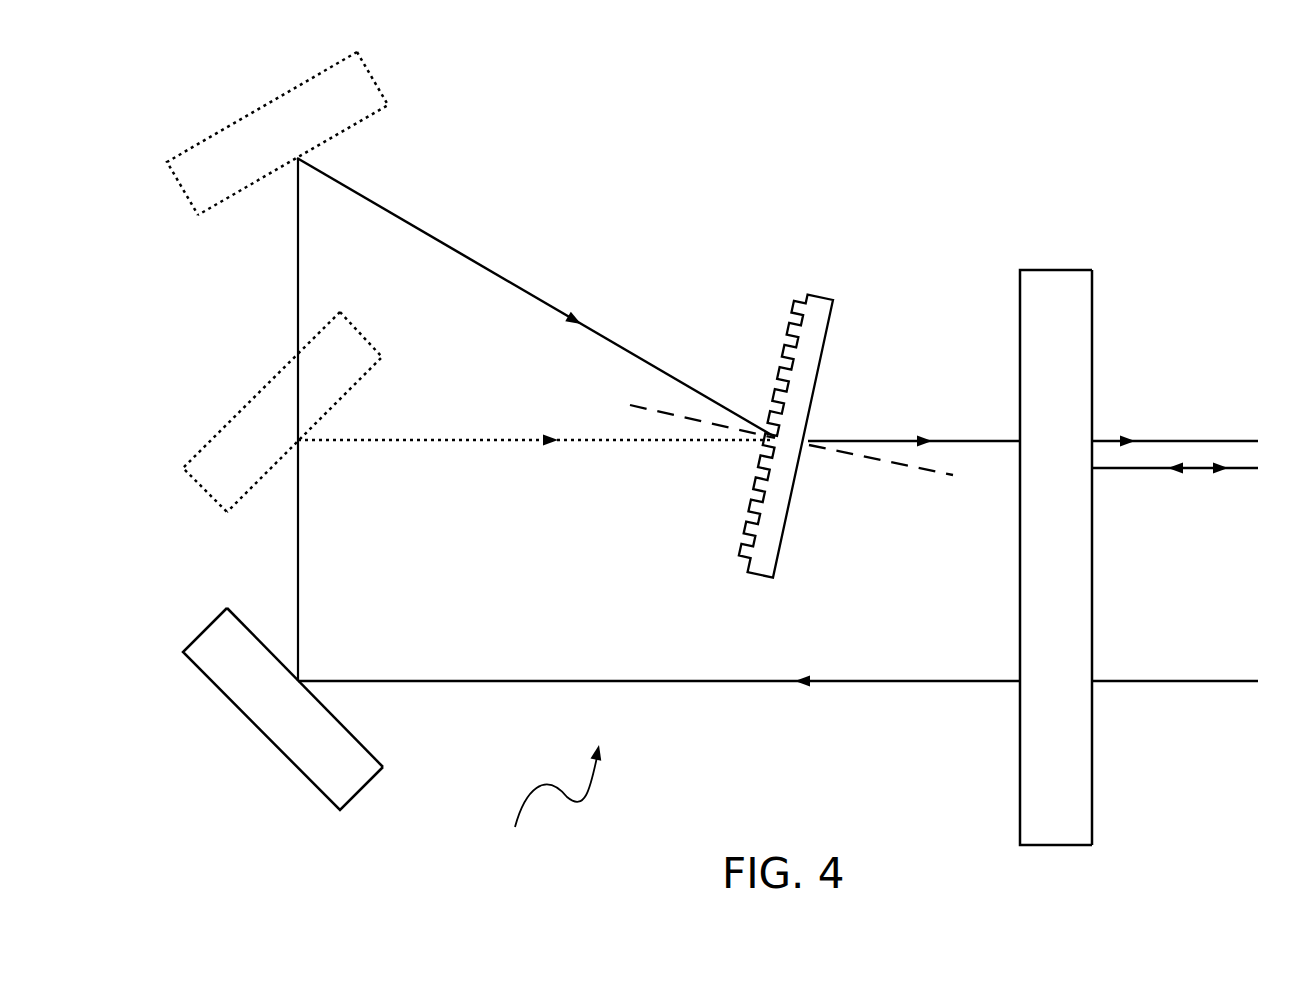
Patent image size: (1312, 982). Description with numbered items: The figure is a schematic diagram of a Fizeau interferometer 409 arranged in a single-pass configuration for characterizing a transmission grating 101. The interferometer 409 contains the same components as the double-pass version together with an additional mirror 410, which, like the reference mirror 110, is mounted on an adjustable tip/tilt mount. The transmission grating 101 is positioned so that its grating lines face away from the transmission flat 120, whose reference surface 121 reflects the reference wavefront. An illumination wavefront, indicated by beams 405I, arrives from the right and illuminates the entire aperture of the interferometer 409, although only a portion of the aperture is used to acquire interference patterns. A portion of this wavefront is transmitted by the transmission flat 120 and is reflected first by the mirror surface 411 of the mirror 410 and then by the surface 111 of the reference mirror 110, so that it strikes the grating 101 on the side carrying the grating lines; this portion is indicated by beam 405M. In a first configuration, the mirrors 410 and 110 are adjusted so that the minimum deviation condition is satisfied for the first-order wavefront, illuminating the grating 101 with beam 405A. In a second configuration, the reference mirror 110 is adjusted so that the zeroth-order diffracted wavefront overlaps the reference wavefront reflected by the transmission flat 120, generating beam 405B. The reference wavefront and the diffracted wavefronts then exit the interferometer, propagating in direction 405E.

The transmission grating 101 is at (826, 300).
The reference mirror 110 is at (372, 97).
The surface of reference mirror 111 is at (355, 128).
The transmission flat 120 is at (1082, 308).
The reference surface 121 is at (1093, 795).
The beam 405A is at (450, 245).
The beam 405B is at (530, 443).
The direction 405E is at (1172, 440).
The beams 405I is at (1183, 470).
The beam 405M is at (583, 681).
The Fizeau interferometer 409 is at (547, 801).
The mirror 410 is at (317, 773).
The mirror surface 411 is at (370, 747).